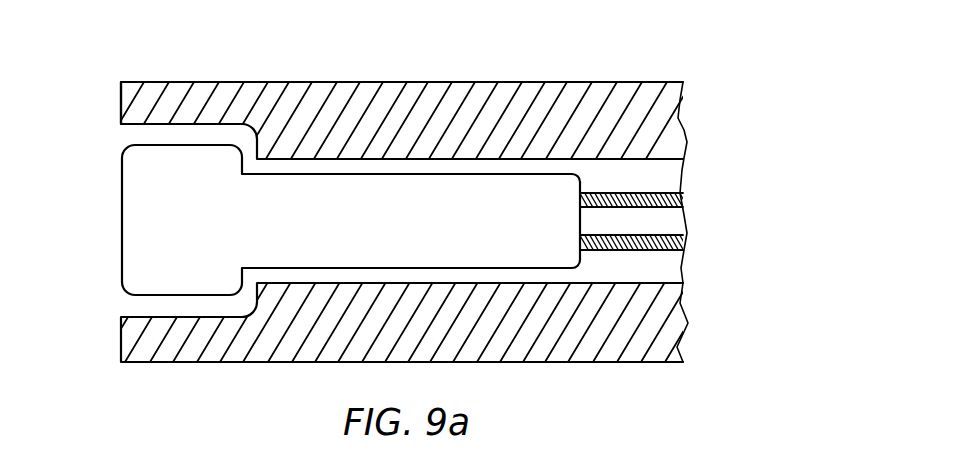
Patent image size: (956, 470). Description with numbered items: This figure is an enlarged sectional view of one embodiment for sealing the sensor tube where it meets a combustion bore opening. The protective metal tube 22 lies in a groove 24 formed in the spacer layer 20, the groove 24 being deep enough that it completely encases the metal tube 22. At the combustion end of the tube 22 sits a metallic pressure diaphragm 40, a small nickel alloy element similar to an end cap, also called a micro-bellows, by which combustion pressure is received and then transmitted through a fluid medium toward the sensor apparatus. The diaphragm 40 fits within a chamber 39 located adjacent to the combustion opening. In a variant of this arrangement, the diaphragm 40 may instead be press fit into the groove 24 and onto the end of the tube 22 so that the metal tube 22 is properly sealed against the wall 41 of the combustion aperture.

The spacer layer 20 is at (550, 92).
The protective metal tube 22 is at (647, 210).
The groove 24 is at (647, 160).
The chamber 39 is at (180, 133).
The pressure diaphragm 40 is at (173, 213).
The wall 41 is at (121, 116).